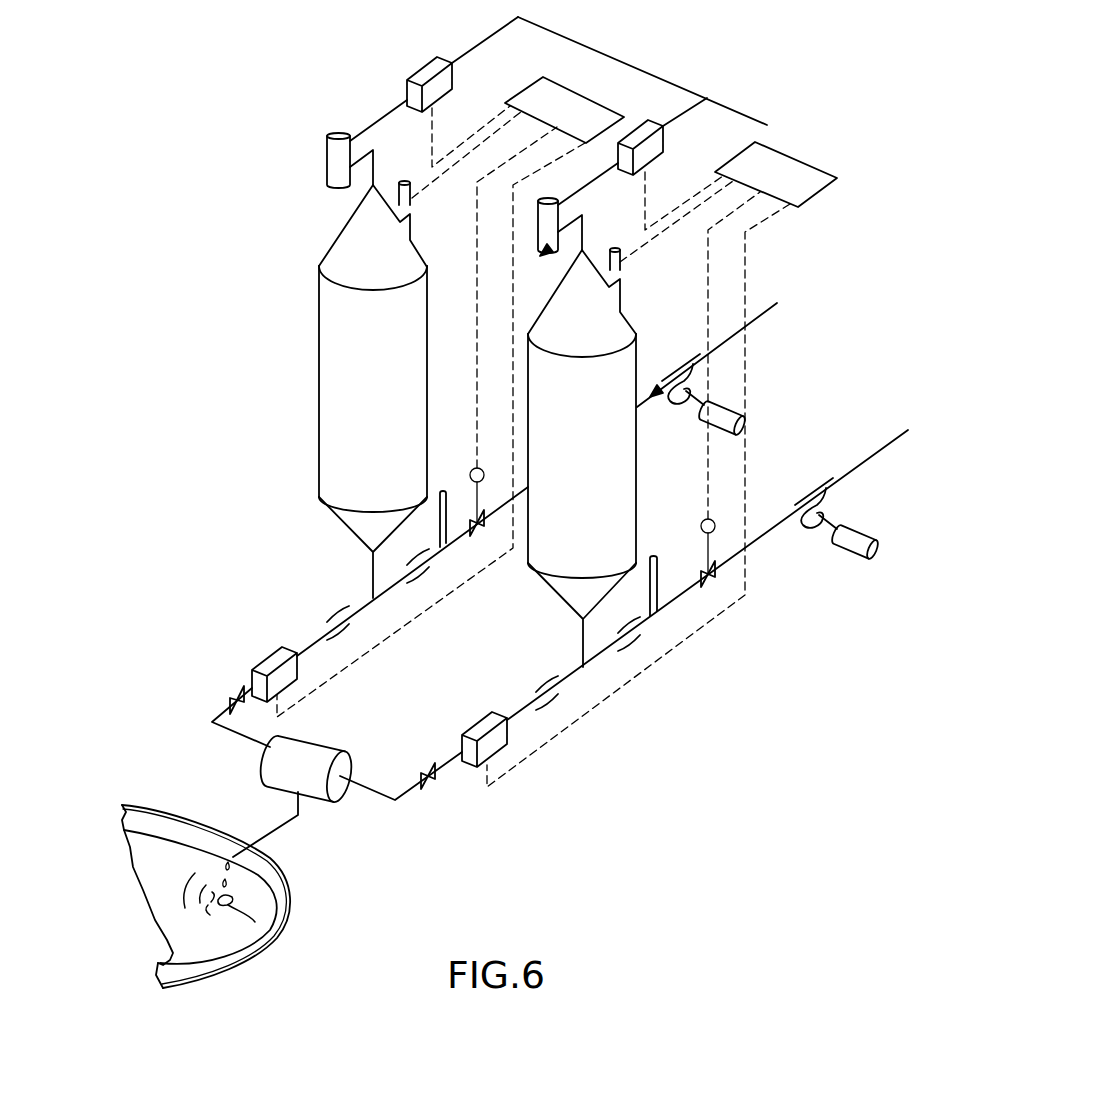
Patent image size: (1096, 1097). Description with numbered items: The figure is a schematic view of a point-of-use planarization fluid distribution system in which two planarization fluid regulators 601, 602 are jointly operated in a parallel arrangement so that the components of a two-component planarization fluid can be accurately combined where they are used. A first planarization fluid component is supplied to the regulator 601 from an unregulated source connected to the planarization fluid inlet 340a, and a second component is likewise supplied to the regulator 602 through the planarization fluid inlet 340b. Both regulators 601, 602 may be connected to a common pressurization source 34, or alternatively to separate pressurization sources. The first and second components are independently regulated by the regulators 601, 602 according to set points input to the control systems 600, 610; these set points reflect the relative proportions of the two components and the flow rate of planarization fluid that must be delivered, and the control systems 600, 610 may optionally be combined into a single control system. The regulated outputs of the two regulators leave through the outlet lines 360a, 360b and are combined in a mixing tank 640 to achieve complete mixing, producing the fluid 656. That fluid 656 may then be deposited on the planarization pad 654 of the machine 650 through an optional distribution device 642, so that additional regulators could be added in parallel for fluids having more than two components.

The pressurization source 34 is at (626, 80).
The control system 600 is at (795, 186).
The control system 610 is at (577, 117).
The planarization fluid regulator 601 is at (250, 301).
The planarization fluid regulator 602 is at (700, 700).
The planarization fluid inlet 340a is at (727, 364).
The planarization fluid inlet 340b is at (862, 482).
The first outlet conduit 360a is at (395, 800).
The second outlet conduit 360b is at (213, 723).
The mixing tank 640 is at (322, 750).
The distribution device 642 is at (298, 817).
The machine 650 is at (293, 907).
The planarization pad 654 is at (149, 838).
The fluid 656 is at (233, 900).